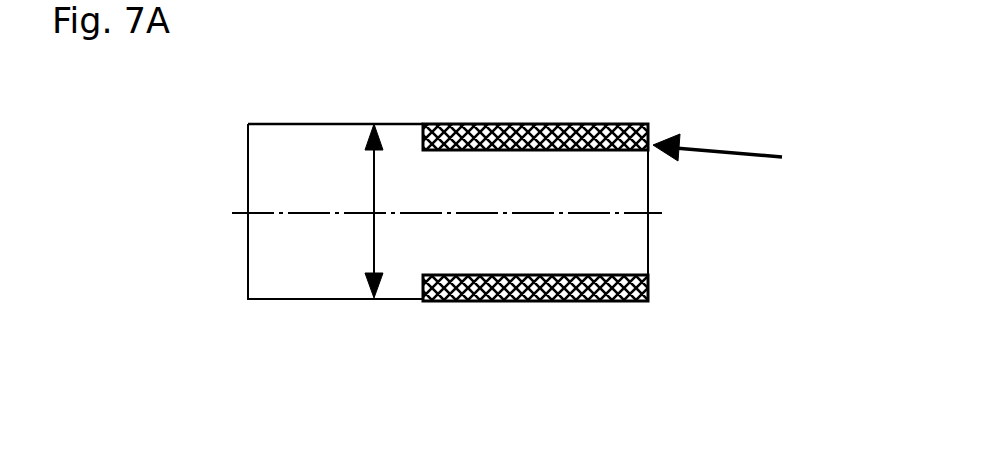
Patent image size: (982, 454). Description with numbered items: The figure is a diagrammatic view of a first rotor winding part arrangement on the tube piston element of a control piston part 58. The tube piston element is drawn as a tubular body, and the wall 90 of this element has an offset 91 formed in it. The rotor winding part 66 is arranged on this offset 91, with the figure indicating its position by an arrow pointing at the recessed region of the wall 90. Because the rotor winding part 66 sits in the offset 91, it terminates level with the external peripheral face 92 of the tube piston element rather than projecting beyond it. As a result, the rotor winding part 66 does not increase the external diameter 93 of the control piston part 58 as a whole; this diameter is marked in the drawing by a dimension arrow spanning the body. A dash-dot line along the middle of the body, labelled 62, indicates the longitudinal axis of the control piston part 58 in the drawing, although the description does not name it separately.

The control piston part 58 is at (258, 185).
The central axis 62 is at (305, 213).
The rotor winding part 66 is at (739, 154).
The wall 90 is at (403, 299).
The offset 91 is at (501, 128).
The external peripheral face 92 is at (363, 108).
The external diameter 93 is at (370, 252).